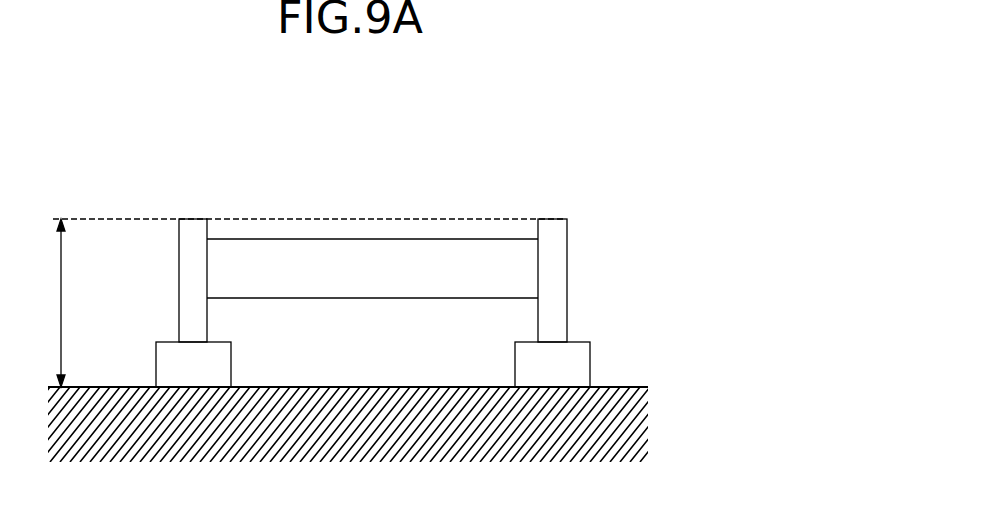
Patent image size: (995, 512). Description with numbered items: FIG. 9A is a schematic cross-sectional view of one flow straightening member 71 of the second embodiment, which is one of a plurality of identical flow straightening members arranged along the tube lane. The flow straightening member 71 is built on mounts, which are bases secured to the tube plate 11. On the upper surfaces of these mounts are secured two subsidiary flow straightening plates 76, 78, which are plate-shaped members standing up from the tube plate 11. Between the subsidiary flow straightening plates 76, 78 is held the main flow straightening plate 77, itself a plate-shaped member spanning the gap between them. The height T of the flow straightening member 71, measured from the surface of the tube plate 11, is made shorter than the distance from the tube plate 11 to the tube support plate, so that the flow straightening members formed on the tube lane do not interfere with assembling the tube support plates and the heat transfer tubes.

The flow straightening member 71 is at (563, 174).
The subsidiary flow straightening plate 76 is at (190, 263).
The main flow straightening plate 77 is at (399, 248).
The subsidiary flow straightening plate 78 is at (557, 263).
The tube plate 11 is at (85, 383).
The height of the flow straightening member T is at (51, 303).